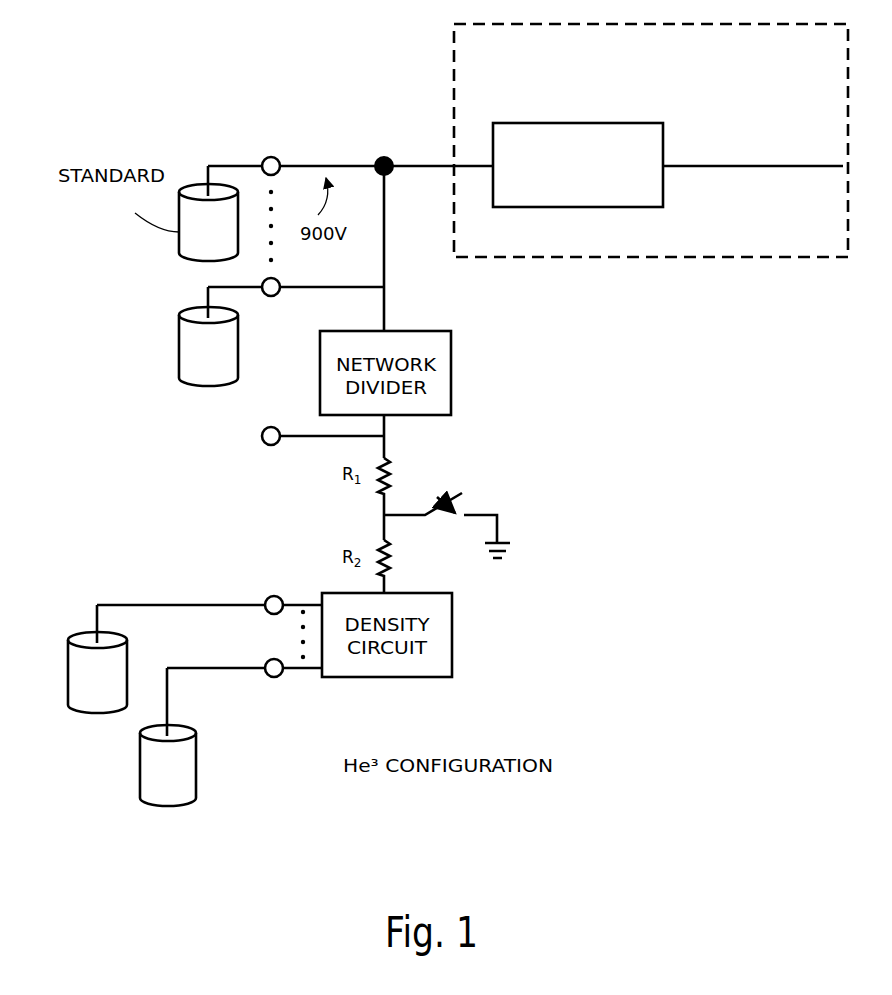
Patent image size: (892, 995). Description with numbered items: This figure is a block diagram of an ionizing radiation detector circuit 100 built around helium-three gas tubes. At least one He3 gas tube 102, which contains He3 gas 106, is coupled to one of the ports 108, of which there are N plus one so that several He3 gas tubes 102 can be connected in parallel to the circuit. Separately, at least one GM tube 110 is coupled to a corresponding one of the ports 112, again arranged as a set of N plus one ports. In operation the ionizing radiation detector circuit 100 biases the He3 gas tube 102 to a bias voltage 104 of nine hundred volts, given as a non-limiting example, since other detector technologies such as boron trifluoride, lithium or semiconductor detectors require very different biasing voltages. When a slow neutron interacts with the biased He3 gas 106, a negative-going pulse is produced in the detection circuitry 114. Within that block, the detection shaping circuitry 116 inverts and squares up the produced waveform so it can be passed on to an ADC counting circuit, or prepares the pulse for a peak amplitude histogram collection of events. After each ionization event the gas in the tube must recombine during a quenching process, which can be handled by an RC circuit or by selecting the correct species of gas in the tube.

The ionizing radiation detector circuit 100 is at (158, 90).
The He3 gas tube 102 is at (179, 245).
The 900V bias voltage 104 is at (430, 160).
The He3 gas 106 is at (186, 386).
The port 108 is at (272, 157).
The GM tube 110 is at (68, 665).
The port 112 is at (278, 595).
The detection circuitry 114 is at (618, 258).
The detection shaping circuitry 116 is at (556, 123).